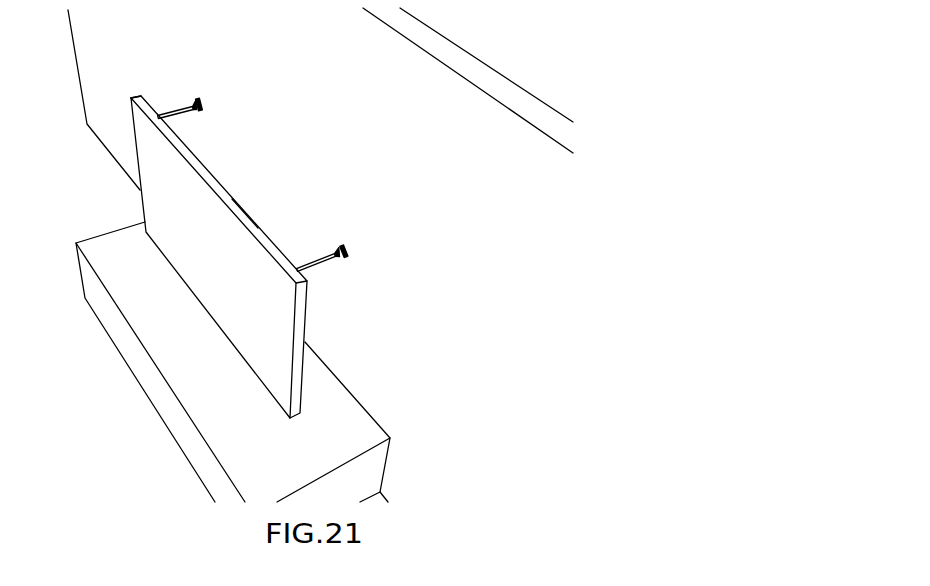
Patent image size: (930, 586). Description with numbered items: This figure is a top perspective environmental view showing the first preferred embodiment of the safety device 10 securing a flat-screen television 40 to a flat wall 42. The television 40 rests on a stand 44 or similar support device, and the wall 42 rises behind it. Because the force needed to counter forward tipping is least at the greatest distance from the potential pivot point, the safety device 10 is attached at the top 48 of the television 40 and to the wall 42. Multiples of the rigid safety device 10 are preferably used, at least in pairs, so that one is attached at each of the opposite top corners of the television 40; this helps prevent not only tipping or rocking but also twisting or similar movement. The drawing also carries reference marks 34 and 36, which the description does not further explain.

The safety device 10 is at (185, 116).
The top edge of panel / joint 34 is at (243, 203).
The direction arrow 36 is at (443, 252).
The television 40 is at (222, 249).
The wall 42 is at (346, 93).
The stand 44 is at (192, 347).
The top 48 is at (137, 97).